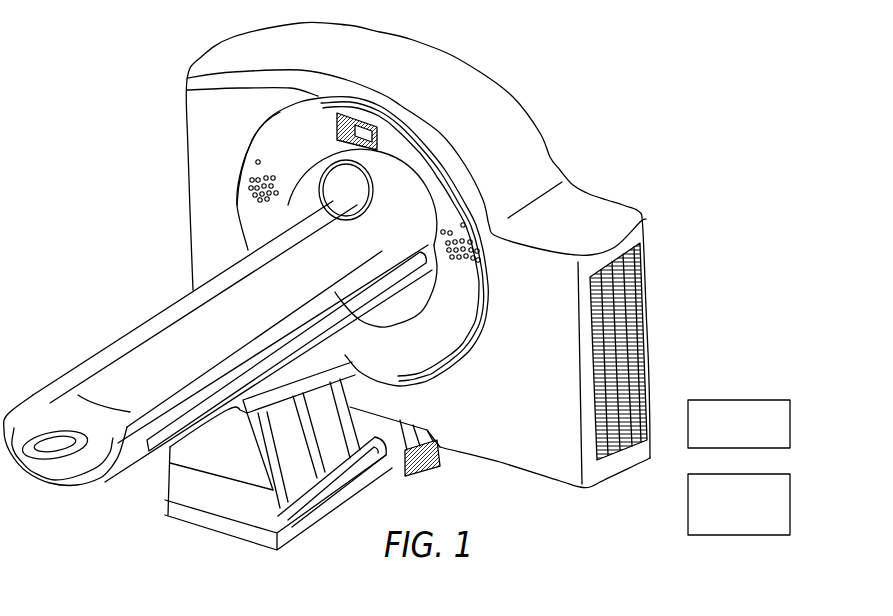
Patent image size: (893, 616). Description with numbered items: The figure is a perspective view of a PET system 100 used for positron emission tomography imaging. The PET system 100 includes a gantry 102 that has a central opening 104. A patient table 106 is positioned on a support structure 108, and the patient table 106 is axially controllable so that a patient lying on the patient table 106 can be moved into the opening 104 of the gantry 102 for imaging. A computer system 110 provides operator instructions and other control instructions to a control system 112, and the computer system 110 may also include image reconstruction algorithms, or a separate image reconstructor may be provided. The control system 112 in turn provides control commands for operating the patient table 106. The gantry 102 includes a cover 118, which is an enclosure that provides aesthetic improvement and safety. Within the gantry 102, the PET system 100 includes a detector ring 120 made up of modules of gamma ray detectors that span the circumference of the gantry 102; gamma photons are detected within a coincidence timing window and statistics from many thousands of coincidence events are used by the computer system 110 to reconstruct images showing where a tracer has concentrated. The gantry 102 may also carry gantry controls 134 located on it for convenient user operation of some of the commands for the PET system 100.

The PET system 100 is at (659, 95).
The gantry 102 is at (237, 57).
The opening 104 is at (293, 128).
The patient table 106 is at (123, 470).
The support structure 108 is at (318, 500).
The computer system 110 is at (765, 399).
The control system 112 is at (712, 536).
The cover 118 is at (507, 100).
The detector ring 120 is at (385, 195).
The gantry controls 134 is at (460, 290).